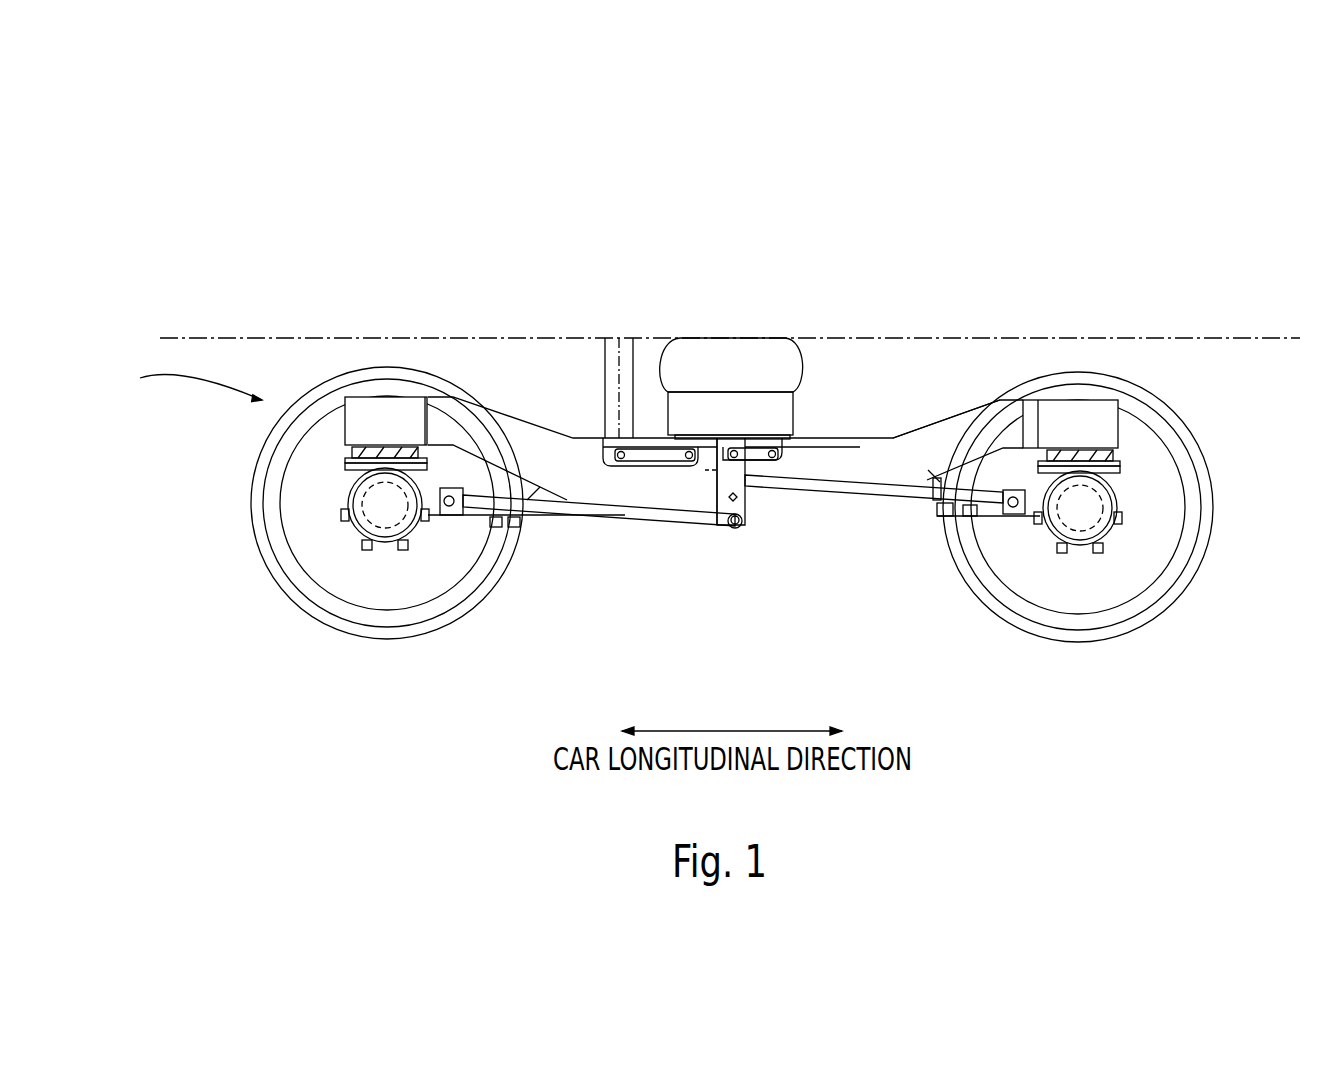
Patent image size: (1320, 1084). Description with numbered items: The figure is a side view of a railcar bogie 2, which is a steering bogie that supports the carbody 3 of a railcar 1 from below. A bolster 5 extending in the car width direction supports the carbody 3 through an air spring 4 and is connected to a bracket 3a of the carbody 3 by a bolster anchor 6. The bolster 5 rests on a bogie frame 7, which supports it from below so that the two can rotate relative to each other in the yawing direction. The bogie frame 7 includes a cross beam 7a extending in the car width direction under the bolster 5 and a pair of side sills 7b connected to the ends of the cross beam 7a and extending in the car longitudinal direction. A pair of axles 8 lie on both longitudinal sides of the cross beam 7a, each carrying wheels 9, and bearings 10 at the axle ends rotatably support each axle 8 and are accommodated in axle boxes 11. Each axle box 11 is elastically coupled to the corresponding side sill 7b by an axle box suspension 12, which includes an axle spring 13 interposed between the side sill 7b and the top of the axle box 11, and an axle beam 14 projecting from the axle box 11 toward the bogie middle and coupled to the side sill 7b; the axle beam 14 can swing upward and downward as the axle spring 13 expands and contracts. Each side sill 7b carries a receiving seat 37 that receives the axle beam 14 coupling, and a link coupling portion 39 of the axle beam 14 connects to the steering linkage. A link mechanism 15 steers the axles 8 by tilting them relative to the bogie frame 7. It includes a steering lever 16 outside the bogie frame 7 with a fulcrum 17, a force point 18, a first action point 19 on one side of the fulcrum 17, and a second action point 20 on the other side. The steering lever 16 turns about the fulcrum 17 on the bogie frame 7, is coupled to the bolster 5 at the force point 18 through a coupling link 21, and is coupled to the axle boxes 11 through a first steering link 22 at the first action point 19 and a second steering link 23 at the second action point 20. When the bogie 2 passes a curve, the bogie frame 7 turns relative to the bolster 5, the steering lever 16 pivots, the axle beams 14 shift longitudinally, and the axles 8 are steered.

The railcar 1 is at (1207, 215).
The railcar bogie 2 is at (186, 382).
The carbody 3 is at (187, 332).
The bracket 3a is at (598, 387).
The air spring 4 is at (772, 352).
The bolster 5 is at (790, 405).
The bolster anchor 6 is at (655, 440).
The bogie frame 7 is at (893, 437).
The cross beam 7a is at (708, 470).
The side sill 7b is at (950, 413).
The axle 8 is at (385, 550).
The wheel 9 is at (292, 591).
The bearing 10 is at (352, 548).
The axle box 11 is at (350, 528).
The axle box suspension 12 is at (427, 553).
The axle spring 13 is at (343, 462).
The axle beam 14 is at (515, 537).
The link mechanism 15 is at (797, 498).
The steering lever 16 is at (748, 512).
The fulcrum 17 is at (745, 492).
The force point 18 is at (735, 440).
The first action point 19 is at (733, 530).
The second action point 20 is at (716, 505).
The coupling link 21 is at (752, 433).
The first steering link 22 is at (588, 516).
The second steering link 23 is at (890, 496).
The receiving seat 37 is at (500, 478).
The link coupling portion 39 is at (443, 520).